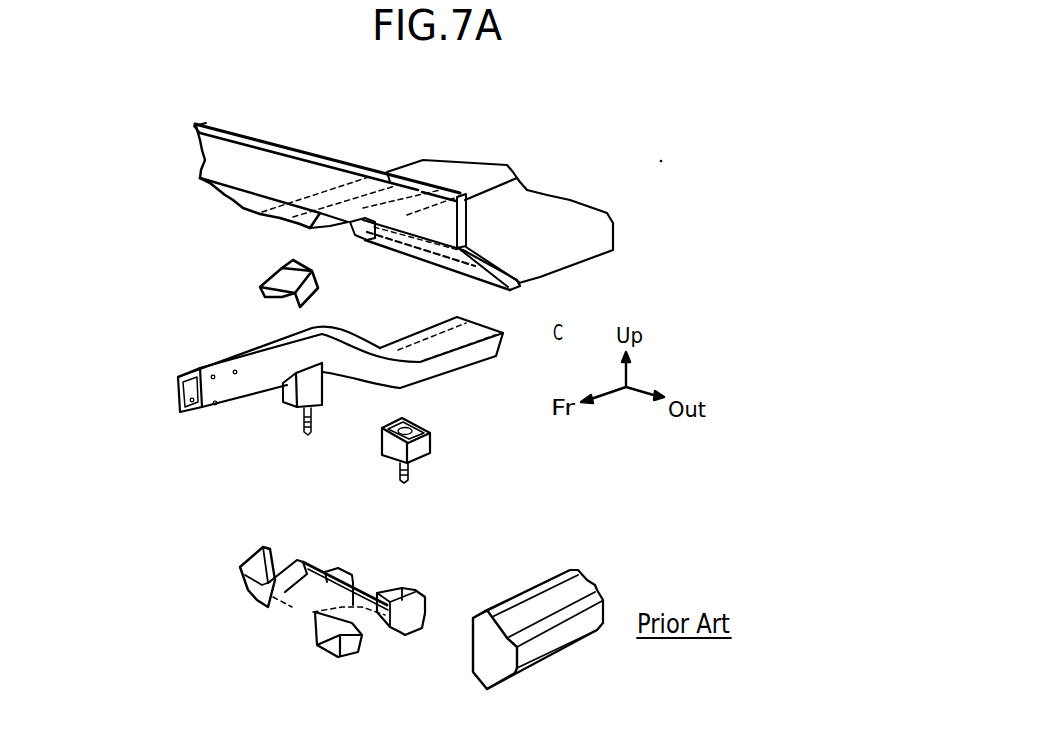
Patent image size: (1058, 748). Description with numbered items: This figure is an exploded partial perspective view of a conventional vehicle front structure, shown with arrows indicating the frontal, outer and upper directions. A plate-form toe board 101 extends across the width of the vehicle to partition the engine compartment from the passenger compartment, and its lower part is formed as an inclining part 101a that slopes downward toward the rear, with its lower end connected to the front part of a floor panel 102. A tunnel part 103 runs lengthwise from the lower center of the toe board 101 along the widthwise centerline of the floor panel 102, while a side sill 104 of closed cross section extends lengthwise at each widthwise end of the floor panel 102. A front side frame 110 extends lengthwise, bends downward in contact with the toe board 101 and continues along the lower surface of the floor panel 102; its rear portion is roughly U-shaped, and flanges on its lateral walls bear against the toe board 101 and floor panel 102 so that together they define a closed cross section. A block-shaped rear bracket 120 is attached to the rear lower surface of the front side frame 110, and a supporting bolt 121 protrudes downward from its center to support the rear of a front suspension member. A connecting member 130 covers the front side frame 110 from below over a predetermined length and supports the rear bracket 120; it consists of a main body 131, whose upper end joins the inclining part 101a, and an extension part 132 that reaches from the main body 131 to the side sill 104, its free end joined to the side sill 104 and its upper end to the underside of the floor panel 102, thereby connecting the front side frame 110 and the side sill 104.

The toe board 101 is at (203, 157).
The inclining part 101a is at (240, 197).
The floor panel 102 is at (543, 200).
The tunnel part 103 is at (480, 172).
The side sill 104 is at (555, 597).
The front side frame 110 is at (220, 392).
The rear bracket 120 is at (423, 450).
The supporting bolt 121 is at (407, 480).
The connecting member 130 is at (332, 637).
The main body 131 is at (275, 607).
The extension part 132 is at (385, 623).